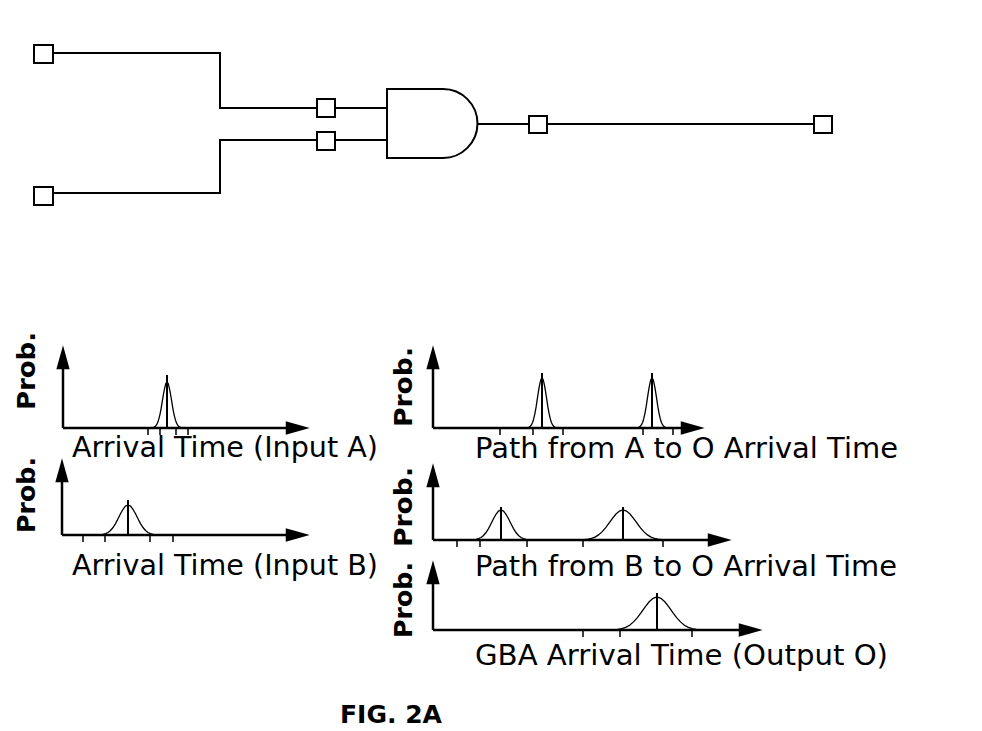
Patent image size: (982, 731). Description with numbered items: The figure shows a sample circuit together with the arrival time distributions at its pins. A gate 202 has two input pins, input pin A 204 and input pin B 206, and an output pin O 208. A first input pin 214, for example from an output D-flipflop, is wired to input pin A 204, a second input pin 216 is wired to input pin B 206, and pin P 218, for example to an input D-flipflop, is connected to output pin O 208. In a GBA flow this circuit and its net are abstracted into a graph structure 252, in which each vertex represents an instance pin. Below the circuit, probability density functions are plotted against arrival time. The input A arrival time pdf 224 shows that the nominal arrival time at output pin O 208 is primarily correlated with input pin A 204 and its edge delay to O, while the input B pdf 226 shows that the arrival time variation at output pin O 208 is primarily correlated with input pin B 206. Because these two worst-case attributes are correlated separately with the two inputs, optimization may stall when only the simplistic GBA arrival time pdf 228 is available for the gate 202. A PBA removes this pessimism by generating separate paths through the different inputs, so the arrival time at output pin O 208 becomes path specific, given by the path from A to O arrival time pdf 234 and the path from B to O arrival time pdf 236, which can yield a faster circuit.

The gate 202 is at (427, 88).
The input pin A 204 is at (335, 100).
The input pin B 206 is at (335, 150).
The output pin O 208 is at (548, 118).
The pin I1 214 is at (40, 63).
The pin I2 216 is at (42, 187).
The pin P 218 is at (822, 115).
The input A arrival time pdf 224 is at (173, 408).
The input B pdf 226 is at (143, 520).
The GBA arrival time pdf 228 is at (702, 613).
The path from A to O arrival time pdf 234 is at (684, 394).
The path from B to O arrival time pdf 236 is at (674, 511).
The graph structure 252 is at (90, 712).